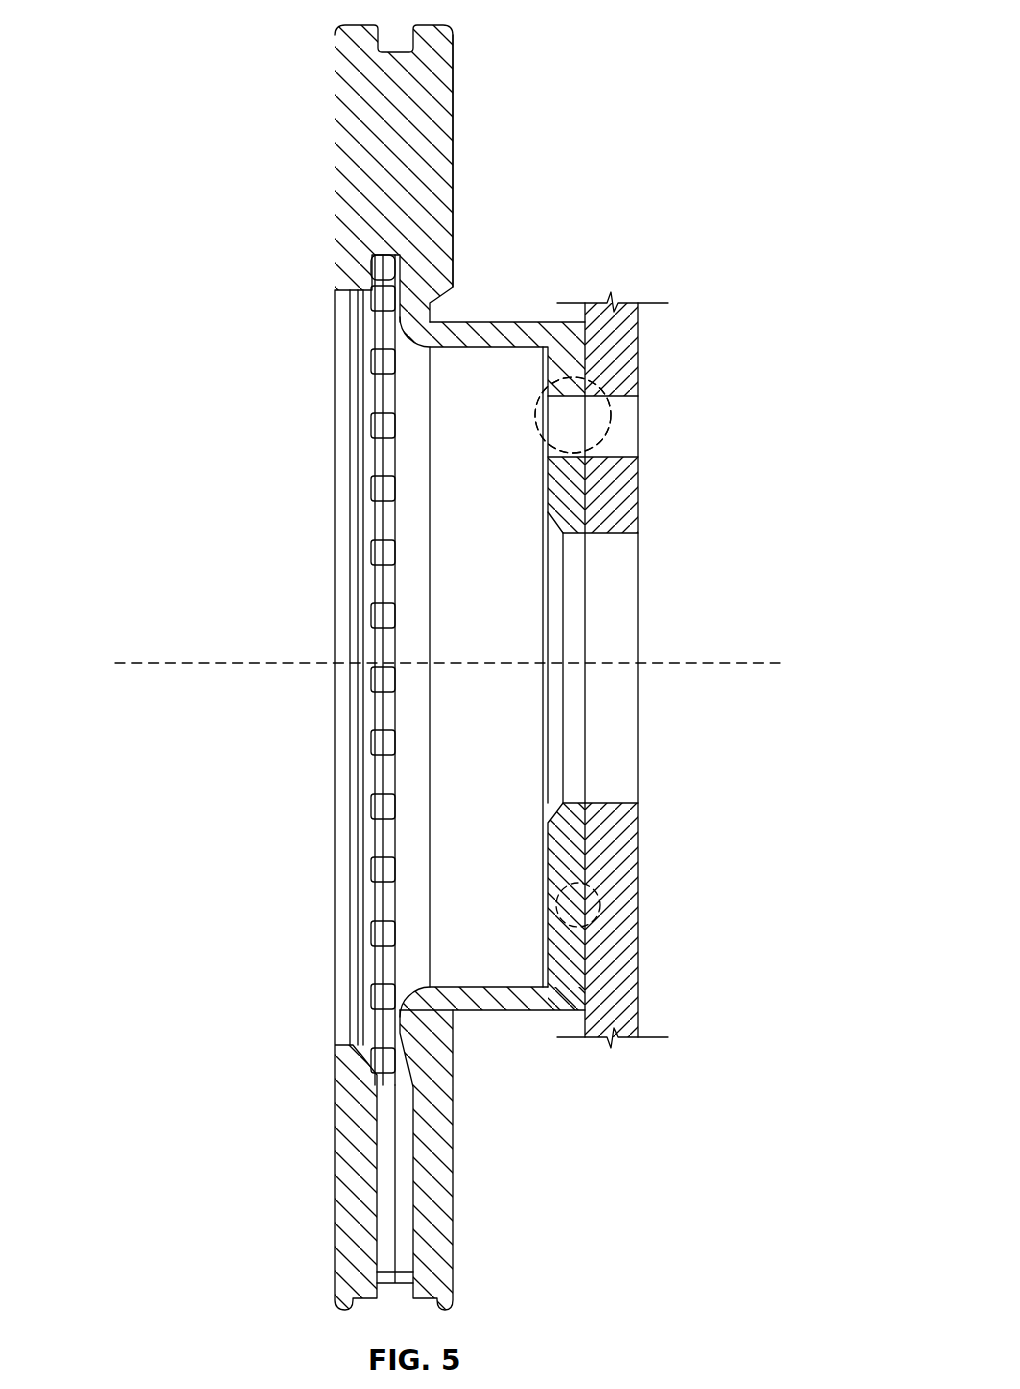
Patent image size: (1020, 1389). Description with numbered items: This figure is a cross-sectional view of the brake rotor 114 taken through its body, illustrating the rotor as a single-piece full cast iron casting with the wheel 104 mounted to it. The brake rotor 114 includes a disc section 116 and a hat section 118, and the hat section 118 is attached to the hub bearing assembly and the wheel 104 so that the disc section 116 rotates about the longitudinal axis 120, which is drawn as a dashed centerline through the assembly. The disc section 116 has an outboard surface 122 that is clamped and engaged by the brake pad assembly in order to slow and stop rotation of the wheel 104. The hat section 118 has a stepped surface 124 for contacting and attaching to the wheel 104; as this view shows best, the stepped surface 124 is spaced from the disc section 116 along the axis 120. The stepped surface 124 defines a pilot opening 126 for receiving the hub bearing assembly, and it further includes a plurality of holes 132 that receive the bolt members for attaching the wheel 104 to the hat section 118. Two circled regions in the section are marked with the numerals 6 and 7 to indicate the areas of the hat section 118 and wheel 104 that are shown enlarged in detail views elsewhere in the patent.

The brake rotor 114 is at (183, 130).
The disc section 116 is at (335, 100).
The outboard surface 122 is at (455, 100).
The hat section 118 is at (494, 330).
The wheel 104 is at (640, 352).
The holes 132 is at (556, 400).
The detail view 6 is at (614, 452).
The detail view 7 is at (606, 912).
The axis 120 is at (180, 663).
The pilot opening 126 is at (573, 803).
The stepped surface 124 is at (590, 980).